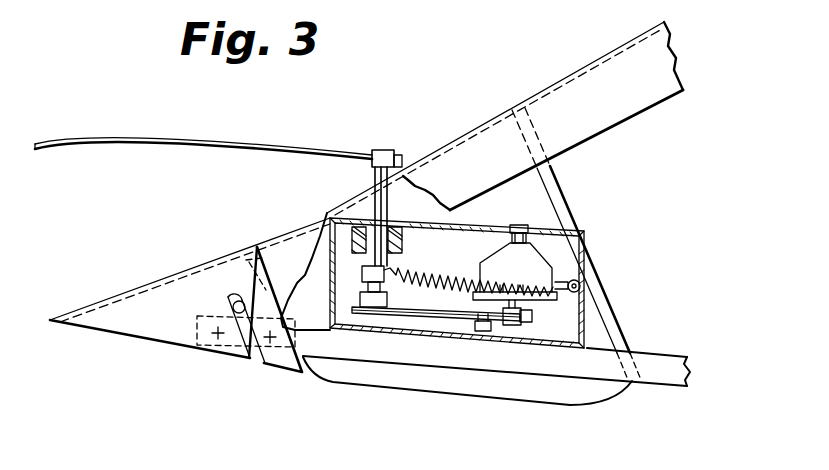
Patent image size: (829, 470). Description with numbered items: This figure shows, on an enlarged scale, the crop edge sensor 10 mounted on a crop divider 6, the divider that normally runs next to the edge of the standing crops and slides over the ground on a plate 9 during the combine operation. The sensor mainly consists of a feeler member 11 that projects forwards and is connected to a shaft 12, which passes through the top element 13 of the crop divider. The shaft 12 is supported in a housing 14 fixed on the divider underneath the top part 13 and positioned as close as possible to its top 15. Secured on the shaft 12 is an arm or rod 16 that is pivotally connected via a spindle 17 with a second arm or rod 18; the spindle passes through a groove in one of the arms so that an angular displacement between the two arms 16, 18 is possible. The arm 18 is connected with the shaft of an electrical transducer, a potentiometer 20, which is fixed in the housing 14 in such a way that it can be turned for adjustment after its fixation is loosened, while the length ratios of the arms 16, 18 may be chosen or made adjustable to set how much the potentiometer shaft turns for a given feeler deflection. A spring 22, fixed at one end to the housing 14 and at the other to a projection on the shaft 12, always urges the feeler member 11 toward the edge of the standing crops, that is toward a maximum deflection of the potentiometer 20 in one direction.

The crop divider 6 is at (284, 371).
The plate 9 is at (404, 383).
The crop edge sensor 10 is at (248, 128).
The feeler member 11 is at (130, 133).
The shaft 12 is at (376, 177).
The top element of the crop divider 13 is at (553, 90).
The housing 14 is at (484, 228).
The top of the crop divider 15 is at (108, 331).
The arm or rod 16 is at (437, 300).
The spindle 17 is at (488, 333).
The arm or rod 18 is at (503, 324).
The potentiometer 20 is at (556, 263).
The spring 22 is at (413, 279).